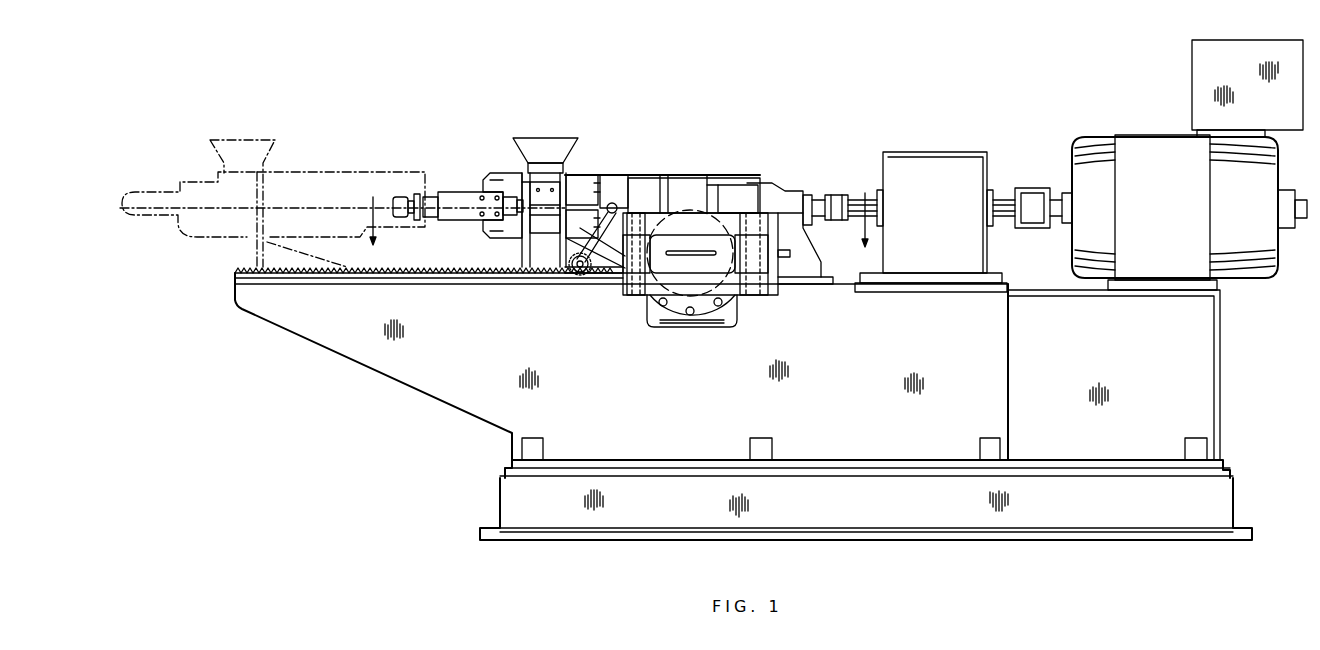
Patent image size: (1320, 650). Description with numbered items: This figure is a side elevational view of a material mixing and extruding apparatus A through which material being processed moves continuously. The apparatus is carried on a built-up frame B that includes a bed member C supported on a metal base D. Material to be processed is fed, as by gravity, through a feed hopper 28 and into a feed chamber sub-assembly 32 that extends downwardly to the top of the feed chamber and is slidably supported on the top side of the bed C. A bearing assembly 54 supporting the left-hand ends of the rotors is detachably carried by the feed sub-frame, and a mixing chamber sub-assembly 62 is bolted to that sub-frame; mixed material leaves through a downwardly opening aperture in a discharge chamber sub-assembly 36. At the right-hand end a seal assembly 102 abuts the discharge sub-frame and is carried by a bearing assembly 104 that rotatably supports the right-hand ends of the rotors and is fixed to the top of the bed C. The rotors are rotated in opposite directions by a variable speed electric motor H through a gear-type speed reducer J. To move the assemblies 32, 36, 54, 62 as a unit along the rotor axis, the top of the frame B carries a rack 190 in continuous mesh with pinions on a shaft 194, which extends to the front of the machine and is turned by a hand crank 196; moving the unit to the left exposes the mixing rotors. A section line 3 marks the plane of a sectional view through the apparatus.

The feed hopper 28 is at (528, 141).
The feed chamber sub-assembly 32 is at (521, 239).
The discharge chamber sub-assembly 36 is at (675, 176).
The bearing assembly 54 is at (483, 194).
The mixing chamber sub-assembly 62 is at (607, 176).
The seal assembly 102 is at (722, 176).
The bearing assembly 104 is at (785, 192).
The rack 190 is at (452, 268).
The shaft 194 is at (577, 273).
The hand crank 196 is at (612, 274).
The section line 3 is at (619, 221).
The material mixing and extruding apparatus A is at (712, 160).
The built-up frame B is at (446, 406).
The bed member C is at (660, 366).
The metal base D is at (500, 499).
The variable speed electric motor H is at (1142, 134).
The gear-type speed reducer J is at (953, 152).